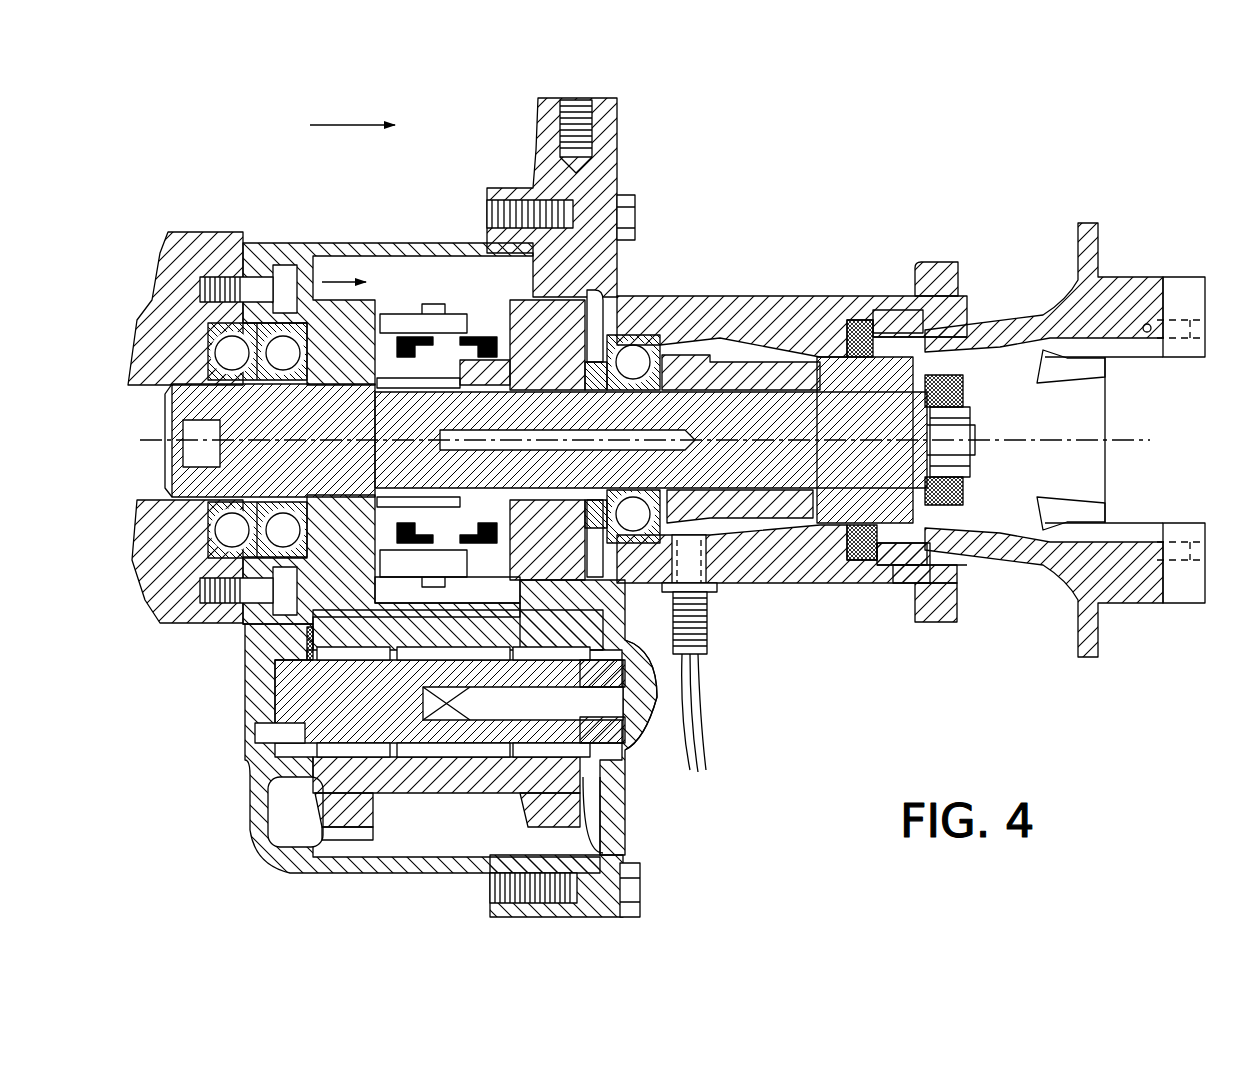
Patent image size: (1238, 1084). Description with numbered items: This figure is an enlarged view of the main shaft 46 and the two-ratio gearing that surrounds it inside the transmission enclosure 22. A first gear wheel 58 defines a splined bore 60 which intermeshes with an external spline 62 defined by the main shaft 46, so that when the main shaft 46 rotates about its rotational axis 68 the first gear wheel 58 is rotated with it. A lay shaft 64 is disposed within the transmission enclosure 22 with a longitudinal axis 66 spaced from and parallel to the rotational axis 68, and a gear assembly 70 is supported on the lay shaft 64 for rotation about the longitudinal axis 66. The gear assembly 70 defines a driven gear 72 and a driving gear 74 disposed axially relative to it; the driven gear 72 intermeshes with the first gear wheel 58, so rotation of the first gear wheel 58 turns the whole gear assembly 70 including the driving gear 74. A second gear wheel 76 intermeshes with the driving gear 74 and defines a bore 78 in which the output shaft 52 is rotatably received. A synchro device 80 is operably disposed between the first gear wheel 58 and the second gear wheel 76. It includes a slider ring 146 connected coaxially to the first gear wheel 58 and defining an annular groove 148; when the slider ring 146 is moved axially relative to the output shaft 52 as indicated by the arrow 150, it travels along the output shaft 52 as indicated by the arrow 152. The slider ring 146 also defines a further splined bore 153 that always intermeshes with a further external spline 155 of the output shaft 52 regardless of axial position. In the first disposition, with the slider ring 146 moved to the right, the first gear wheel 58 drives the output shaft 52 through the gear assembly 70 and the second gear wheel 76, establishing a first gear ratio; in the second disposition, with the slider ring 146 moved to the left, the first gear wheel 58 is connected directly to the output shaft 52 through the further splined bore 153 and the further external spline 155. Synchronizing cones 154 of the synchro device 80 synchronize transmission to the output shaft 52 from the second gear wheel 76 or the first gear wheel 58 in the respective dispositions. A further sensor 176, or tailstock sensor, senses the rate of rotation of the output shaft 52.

The transmission enclosure 22 is at (448, 833).
The main shaft 46 is at (205, 497).
The output shaft 52 is at (797, 455).
The first gear wheel 58 is at (318, 318).
The splined bore 60 is at (248, 558).
The external spline 62 is at (330, 480).
The lay shaft 64 is at (418, 800).
The longitudinal axis 66 is at (607, 705).
The rotational axis 68 is at (1143, 438).
The gear assembly 70 is at (363, 722).
The driven gear 72 is at (330, 783).
The driving gear 74 is at (580, 815).
The second gear wheel 76 is at (563, 327).
The bore 78 is at (600, 336).
The synchro device 80 is at (620, 663).
The slider ring 146 is at (413, 315).
The annular groove 148 is at (467, 322).
The arrow 150 is at (337, 122).
The arrow 152 is at (330, 276).
The further splined bore 153 is at (445, 330).
The synchronizing cones 154 is at (490, 293).
The further external spline 155 is at (520, 625).
The further sensor 176 is at (710, 607).